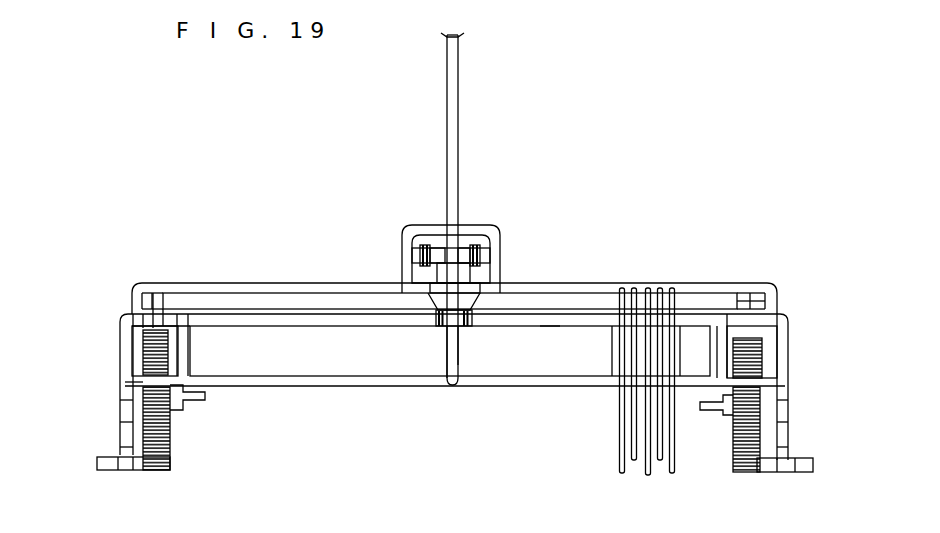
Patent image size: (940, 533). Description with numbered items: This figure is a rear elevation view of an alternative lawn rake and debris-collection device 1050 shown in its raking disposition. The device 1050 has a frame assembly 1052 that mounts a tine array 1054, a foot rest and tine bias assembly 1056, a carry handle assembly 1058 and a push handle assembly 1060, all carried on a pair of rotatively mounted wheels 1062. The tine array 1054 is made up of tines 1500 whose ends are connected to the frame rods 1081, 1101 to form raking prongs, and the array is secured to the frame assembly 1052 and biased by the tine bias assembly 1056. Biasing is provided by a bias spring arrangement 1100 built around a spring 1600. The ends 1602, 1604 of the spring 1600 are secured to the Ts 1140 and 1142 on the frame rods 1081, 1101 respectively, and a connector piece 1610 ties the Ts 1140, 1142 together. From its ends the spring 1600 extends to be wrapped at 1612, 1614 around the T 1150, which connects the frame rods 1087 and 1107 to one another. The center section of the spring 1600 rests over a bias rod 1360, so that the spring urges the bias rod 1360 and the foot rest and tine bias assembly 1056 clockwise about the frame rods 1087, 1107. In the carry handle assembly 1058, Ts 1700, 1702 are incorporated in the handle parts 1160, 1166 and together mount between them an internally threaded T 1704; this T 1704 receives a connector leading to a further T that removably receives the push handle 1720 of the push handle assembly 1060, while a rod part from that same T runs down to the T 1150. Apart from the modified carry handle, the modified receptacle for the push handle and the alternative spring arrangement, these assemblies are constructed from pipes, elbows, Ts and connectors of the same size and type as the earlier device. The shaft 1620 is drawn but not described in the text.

The lawn rake and debris-collection device 1050 is at (690, 192).
The frame assembly 1052 is at (802, 274).
The tine array 1054 is at (600, 442).
The foot rest and tine bias assembly 1056 is at (112, 410).
The carry handle assembly 1058 is at (498, 217).
The push handle assembly 1060 is at (460, 80).
The wheels 1062 is at (170, 446).
The frame rod 1081 is at (703, 285).
The frame rod 1087 is at (615, 323).
The bias spring arrangement 1100 is at (461, 362).
The frame rod 1101 is at (258, 285).
The frame rod 1107 is at (258, 323).
The T 1140 is at (565, 296).
The T 1142 is at (430, 312).
The T 1150 is at (459, 338).
The handle part 1160 is at (502, 258).
The handle part 1166 is at (426, 242).
The bias rod 1360 is at (510, 384).
The tines 1500 is at (645, 478).
The spring 1600 is at (440, 364).
The spring end 1602 is at (505, 292).
The spring end 1604 is at (402, 283).
The connector piece 1610 is at (438, 322).
The spring wrap 1612 is at (530, 323).
The spring wrap 1614 is at (425, 336).
The shaft tip 1620 is at (449, 392).
The T 1700 is at (497, 260).
The T 1702 is at (402, 232).
The T 1704 is at (470, 232).
The push handle 1720 is at (447, 68).